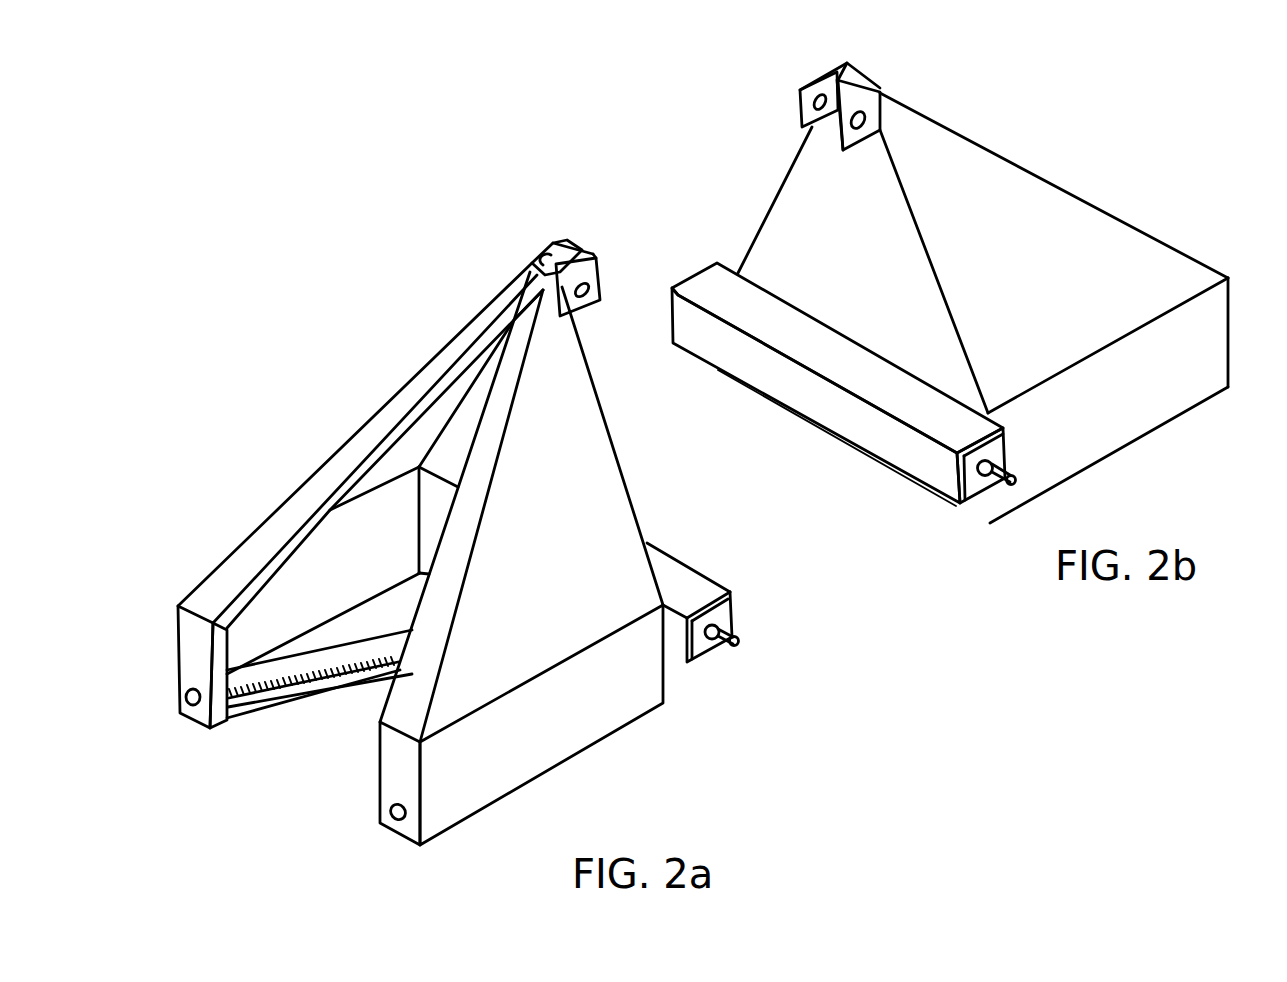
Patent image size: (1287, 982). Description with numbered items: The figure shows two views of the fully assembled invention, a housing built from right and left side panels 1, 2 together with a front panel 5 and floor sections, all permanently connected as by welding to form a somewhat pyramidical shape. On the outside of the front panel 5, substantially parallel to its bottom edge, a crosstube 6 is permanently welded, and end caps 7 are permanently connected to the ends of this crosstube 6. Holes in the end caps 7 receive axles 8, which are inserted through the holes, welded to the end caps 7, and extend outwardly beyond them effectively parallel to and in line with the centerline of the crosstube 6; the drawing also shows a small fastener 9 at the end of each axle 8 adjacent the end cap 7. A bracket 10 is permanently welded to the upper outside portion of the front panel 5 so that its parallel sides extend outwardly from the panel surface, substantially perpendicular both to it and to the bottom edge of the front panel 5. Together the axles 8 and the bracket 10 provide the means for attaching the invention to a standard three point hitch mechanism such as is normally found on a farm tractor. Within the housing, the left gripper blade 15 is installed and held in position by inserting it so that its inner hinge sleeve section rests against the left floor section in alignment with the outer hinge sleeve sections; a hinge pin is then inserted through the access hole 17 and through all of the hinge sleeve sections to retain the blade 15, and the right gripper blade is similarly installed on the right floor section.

In FIG. 2A, the right side panel 1 is at (512, 667).
In FIG. 2A, the left side panel 2 is at (382, 422).
In FIG. 2B, the left side panel 2 is at (1110, 303).
In FIG. 2B, the front panel 5 is at (842, 193).
In FIG. 2A, the crosstube 6 is at (680, 577).
In FIG. 2B, the crosstube 6 is at (860, 422).
In FIG. 2A, the end caps 7 is at (718, 618).
In FIG. 2B, the end caps 7 is at (973, 488).
In FIG. 2A, the axles 8 is at (718, 643).
In FIG. 2B, the axles 8 is at (1012, 470).
In FIG. 2A, the bolt 9 is at (735, 645).
In FIG. 2B, the bolt 9 is at (1017, 472).
In FIG. 2A, the bracket 10 is at (552, 243).
In FIG. 2B, the bracket 10 is at (823, 80).
In FIG. 2A, the left gripper blade 15 is at (263, 706).
In FIG. 2A, the access hole 17 is at (186, 694).